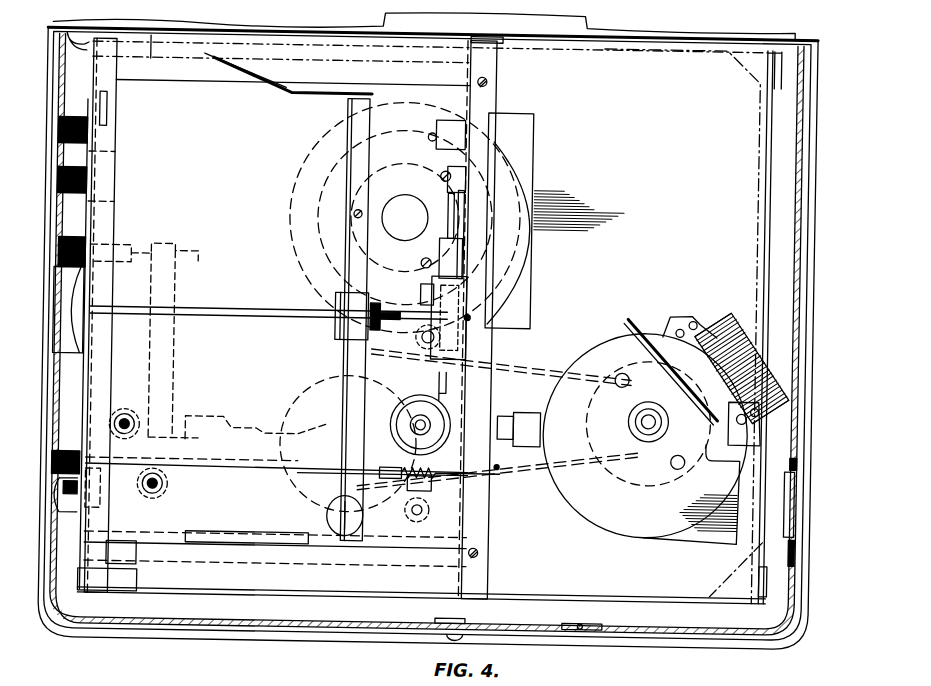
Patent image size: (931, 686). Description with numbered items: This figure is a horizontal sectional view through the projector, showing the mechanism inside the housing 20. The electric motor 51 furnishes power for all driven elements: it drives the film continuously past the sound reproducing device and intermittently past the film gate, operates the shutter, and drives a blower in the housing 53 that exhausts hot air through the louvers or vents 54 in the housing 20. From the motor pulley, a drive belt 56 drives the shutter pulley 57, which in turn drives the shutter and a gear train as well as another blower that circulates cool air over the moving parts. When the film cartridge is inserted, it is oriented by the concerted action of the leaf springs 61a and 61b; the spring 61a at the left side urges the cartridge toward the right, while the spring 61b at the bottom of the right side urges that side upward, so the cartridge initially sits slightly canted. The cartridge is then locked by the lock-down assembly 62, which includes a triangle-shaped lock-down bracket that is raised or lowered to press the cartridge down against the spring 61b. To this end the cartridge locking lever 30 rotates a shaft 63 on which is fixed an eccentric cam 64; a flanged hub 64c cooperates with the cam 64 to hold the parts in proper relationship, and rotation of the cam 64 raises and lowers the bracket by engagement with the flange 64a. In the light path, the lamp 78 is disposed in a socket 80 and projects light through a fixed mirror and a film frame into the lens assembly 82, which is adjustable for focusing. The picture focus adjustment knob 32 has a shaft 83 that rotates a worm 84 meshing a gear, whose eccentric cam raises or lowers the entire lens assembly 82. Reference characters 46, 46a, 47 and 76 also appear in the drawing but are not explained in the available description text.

The housing 20 is at (814, 358).
The lever 30 is at (59, 296).
The picture focus adjustment knob 32 is at (87, 506).
The frame rail plate 46 is at (486, 126).
The left frame rail 46a is at (101, 228).
The cam disc 47 is at (436, 247).
The electric motor 51 is at (728, 323).
The housing 53 is at (694, 535).
The louvers or vents 54 is at (806, 506).
The drive belt 56 is at (529, 370).
The shutter pulley 57 is at (301, 375).
The leaf spring 61a is at (286, 96).
The leaf spring 61b is at (231, 544).
The lock-down assembly 62 is at (331, 141).
The shaft 63 is at (215, 322).
The eccentric cam 64 is at (335, 322).
The flange 64a is at (340, 307).
The flanged hub 64c is at (439, 296).
The latch lever 76 is at (446, 283).
The lamp 78 is at (483, 399).
The socket 80 is at (522, 460).
The lens assembly 82 is at (420, 418).
The shaft 83 is at (132, 477).
The worm 84 is at (370, 518).